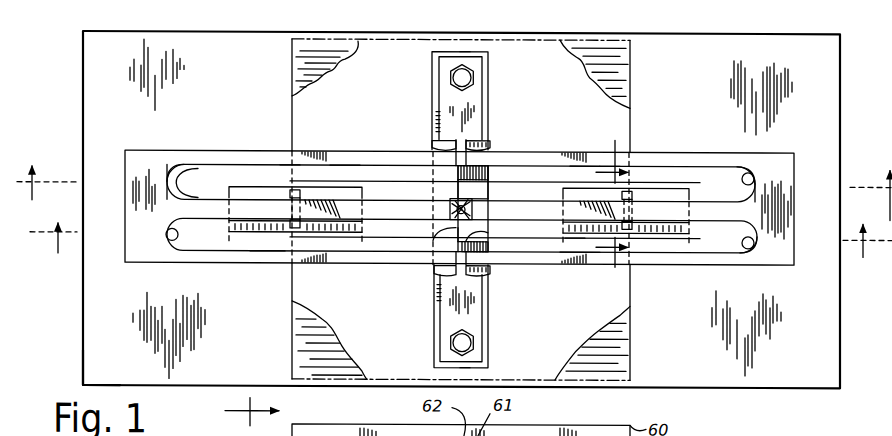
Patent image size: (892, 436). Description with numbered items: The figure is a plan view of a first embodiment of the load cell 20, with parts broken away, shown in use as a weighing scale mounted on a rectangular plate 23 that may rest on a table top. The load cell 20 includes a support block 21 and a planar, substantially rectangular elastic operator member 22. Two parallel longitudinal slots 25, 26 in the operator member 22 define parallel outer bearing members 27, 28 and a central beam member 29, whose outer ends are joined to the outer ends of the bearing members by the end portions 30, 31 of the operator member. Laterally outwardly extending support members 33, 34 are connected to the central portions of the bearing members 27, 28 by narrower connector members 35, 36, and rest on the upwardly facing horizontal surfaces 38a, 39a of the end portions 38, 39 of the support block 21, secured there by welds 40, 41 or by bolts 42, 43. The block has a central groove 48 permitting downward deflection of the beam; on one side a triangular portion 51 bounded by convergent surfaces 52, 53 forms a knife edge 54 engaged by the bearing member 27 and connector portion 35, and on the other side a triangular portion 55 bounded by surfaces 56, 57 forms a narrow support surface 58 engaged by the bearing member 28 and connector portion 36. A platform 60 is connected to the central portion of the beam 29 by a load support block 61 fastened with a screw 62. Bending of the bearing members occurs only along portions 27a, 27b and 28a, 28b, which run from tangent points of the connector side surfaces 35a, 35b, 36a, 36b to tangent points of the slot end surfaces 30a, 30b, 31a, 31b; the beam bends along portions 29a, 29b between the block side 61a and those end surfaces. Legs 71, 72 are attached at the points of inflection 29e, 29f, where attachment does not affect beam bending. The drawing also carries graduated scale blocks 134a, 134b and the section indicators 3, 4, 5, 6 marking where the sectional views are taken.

The load cell 20 is at (82, 356).
The support block 21 is at (431, 366).
The operator member 22 is at (157, 270).
The rectangular plate 23 is at (84, 100).
The longitudinal slot 25 is at (712, 176).
The longitudinal slot 26 is at (680, 250).
The outer bearing member 27 is at (222, 156).
The bearing member portion 27a is at (568, 162).
The bearing member end portion 27b is at (338, 162).
The outer bearing member 28 is at (203, 262).
The bearing member portion 28a is at (590, 260).
The bearing member portion 28b is at (263, 262).
The central beam member 29 is at (240, 210).
The beam member portion 29a is at (578, 232).
The beam member portion 29b is at (208, 205).
The point of inflection 29e is at (288, 162).
The point of inflection 29f is at (620, 208).
The end portion 30 is at (786, 160).
The end surface 30a is at (754, 174).
The end surface 30b is at (754, 240).
The end portion 31 is at (147, 162).
The end surface 31a is at (192, 165).
The end surface 31b is at (167, 232).
The support member 33 is at (483, 94).
The support member 34 is at (484, 320).
The connector member 35 is at (470, 139).
The arcuate side surface 35a is at (492, 142).
The side surface 35b is at (433, 141).
The connector member 36 is at (441, 286).
The side surface 36a is at (492, 270).
The side surface 36b is at (436, 268).
The end portion of support block 38 is at (489, 61).
The horizontal surface 38a is at (468, 52).
The end portion of support block 39 is at (488, 300).
The horizontal surface 39a is at (490, 361).
The weld 40 is at (438, 118).
The weld 41 is at (440, 294).
The bolt 42 is at (452, 76).
The bolt 43 is at (452, 341).
The central slot or groove 48 is at (446, 227).
The triangular portion 51 is at (490, 182).
The surface 52 is at (456, 176).
The surface 53 is at (490, 172).
The knife edge 54 is at (457, 188).
The triangular portion 55 is at (470, 236).
The convergent surface 56 is at (458, 245).
The convergent surface 57 is at (490, 245).
The support surface 58 is at (432, 239).
The platform 60 is at (629, 59).
The load support block 61 is at (450, 208).
The side of load support block 61a is at (470, 191).
The screw 62 is at (474, 211).
The leg 71 is at (308, 174).
The leg 72 is at (626, 193).
The left scale block 134a is at (338, 176).
The right scale block 134b is at (696, 234).
The section line 3- 3 is at (234, 411).
The section line 4- 4 is at (461, 253).
The section line 5- 5 is at (454, 198).
The section line 6- 6 is at (602, 203).